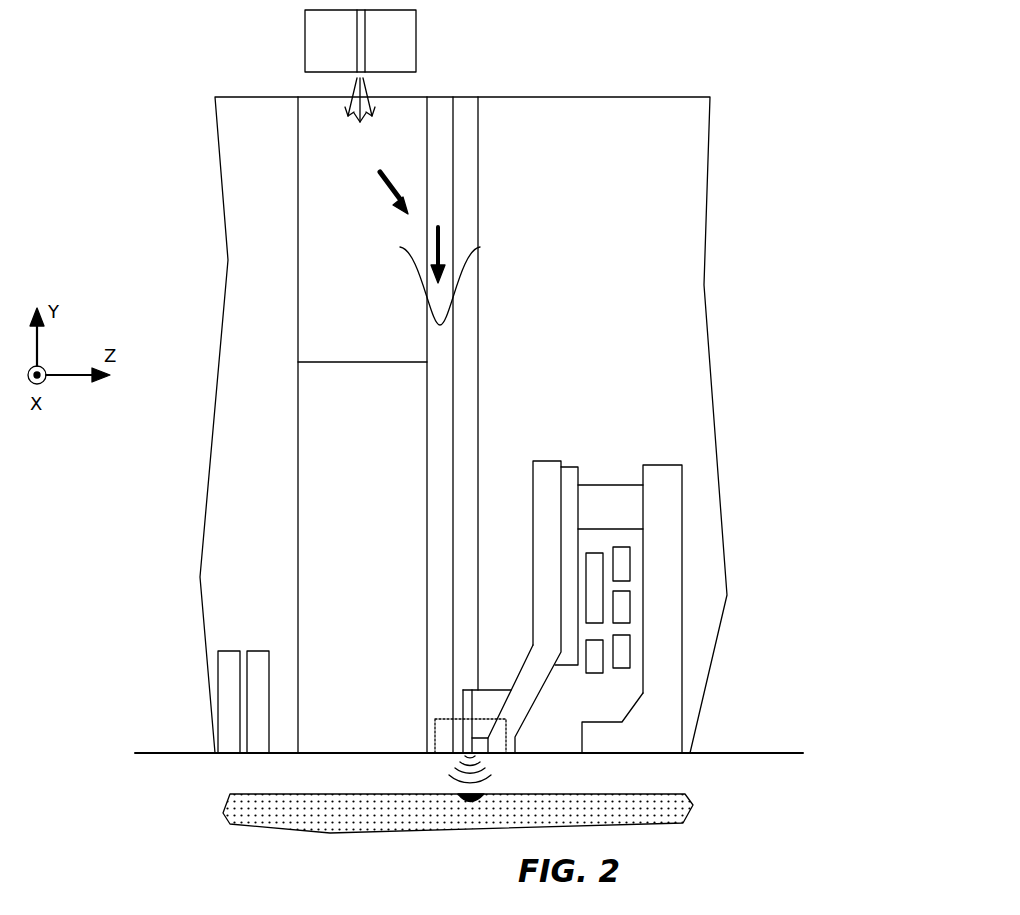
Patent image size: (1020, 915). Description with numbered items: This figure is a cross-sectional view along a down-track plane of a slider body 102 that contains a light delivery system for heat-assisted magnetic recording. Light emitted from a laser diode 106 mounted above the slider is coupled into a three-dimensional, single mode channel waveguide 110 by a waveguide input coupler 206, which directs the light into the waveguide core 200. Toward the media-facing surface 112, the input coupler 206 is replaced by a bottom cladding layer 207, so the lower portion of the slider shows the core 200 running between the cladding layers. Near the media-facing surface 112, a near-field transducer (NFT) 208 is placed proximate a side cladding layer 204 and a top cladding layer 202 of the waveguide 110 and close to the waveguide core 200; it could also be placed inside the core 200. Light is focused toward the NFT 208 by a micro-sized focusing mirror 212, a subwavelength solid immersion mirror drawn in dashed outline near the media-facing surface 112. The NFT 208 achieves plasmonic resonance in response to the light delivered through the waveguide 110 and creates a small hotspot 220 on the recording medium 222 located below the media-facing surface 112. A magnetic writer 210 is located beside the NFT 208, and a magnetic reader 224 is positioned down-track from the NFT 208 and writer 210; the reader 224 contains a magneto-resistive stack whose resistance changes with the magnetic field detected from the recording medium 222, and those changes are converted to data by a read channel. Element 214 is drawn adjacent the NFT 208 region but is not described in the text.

The slider body 102 is at (165, 206).
The laser diode 106 is at (305, 27).
The channel waveguide 110 is at (513, 199).
The media-facing surface 112 is at (790, 755).
The waveguide core 200 is at (447, 108).
The top cladding layer 202 is at (515, 120).
The side cladding layer 204 is at (473, 110).
The waveguide input coupler 206 is at (313, 125).
The bottom cladding layer 207 is at (298, 505).
The near-field transducer (NFT) 208 is at (463, 695).
The magnetic writer 210 is at (588, 422).
The micro-sized focusing mirror 212 is at (435, 735).
The nozzle tip 214 is at (500, 688).
The hotspot 220 is at (472, 810).
The recording medium 222 is at (645, 800).
The magnetic reader 224 is at (220, 682).